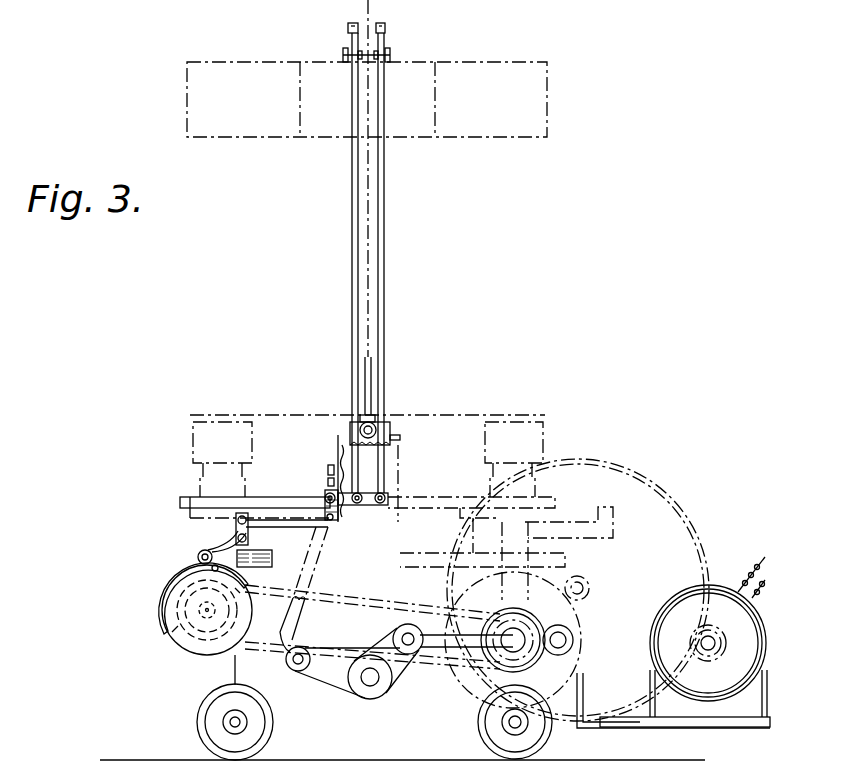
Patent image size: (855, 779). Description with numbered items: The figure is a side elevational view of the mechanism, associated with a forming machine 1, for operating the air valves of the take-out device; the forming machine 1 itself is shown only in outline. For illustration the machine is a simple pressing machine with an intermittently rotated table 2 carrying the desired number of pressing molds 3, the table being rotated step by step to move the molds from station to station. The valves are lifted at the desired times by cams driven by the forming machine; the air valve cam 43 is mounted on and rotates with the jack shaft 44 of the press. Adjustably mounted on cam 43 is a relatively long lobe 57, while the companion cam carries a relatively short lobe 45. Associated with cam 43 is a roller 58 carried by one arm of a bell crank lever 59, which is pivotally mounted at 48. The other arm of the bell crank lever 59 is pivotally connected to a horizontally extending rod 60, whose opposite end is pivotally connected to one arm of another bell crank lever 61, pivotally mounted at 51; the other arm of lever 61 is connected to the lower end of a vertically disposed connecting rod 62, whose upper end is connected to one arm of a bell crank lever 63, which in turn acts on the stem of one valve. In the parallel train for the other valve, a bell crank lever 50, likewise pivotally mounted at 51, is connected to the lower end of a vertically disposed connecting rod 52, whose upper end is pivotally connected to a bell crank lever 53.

The forming machine 1 is at (235, 672).
The intermittently rotated table 2 is at (180, 503).
The pressing molds 3 is at (547, 435).
The air valve cam 43 is at (166, 591).
The jack shaft 44 is at (200, 610).
The short lobe 45 is at (248, 569).
The pivot 48 is at (250, 541).
The bell crank lever 50 is at (378, 505).
The pivot 51 is at (336, 490).
The connecting rod 52 is at (384, 301).
The bell crank lever 53 is at (386, 30).
The long lobe 57 is at (190, 650).
The roller 58 is at (197, 560).
The bell crank lever 59 is at (232, 539).
The horizontally extending rod 60 is at (270, 521).
The bell crank lever 61 is at (325, 497).
The connecting rod 62 is at (352, 319).
The bell crank lever 63 is at (349, 30).